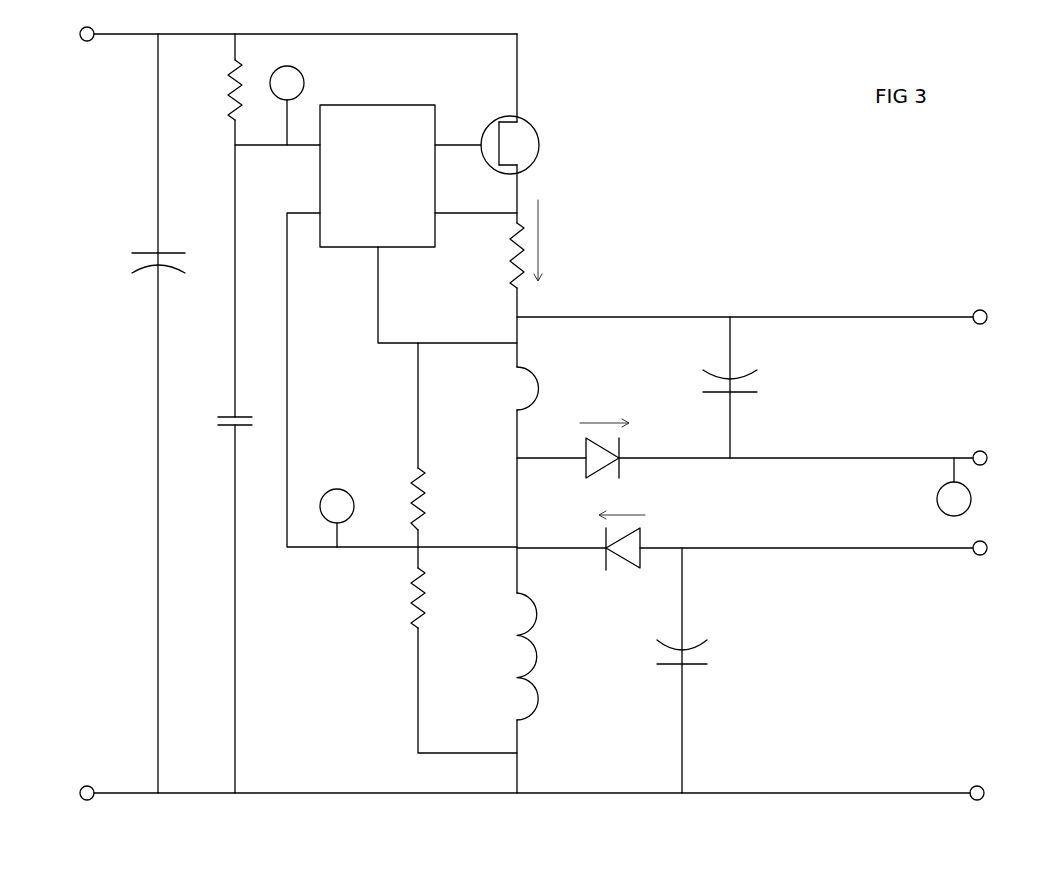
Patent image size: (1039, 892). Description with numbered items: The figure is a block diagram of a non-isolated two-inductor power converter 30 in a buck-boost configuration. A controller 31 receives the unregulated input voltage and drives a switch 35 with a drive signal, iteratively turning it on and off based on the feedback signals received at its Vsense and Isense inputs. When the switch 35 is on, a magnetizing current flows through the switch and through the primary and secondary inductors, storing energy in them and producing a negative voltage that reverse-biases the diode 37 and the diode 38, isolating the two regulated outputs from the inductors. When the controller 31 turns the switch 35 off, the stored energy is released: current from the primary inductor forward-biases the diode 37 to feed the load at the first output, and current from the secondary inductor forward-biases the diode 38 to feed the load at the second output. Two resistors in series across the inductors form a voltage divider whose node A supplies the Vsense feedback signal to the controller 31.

The non-isolated two-inductor power converter 30 is at (262, 812).
The controller 31 is at (368, 103).
The switch 35 is at (542, 147).
The diode 37 is at (622, 580).
The diode 38 is at (578, 470).